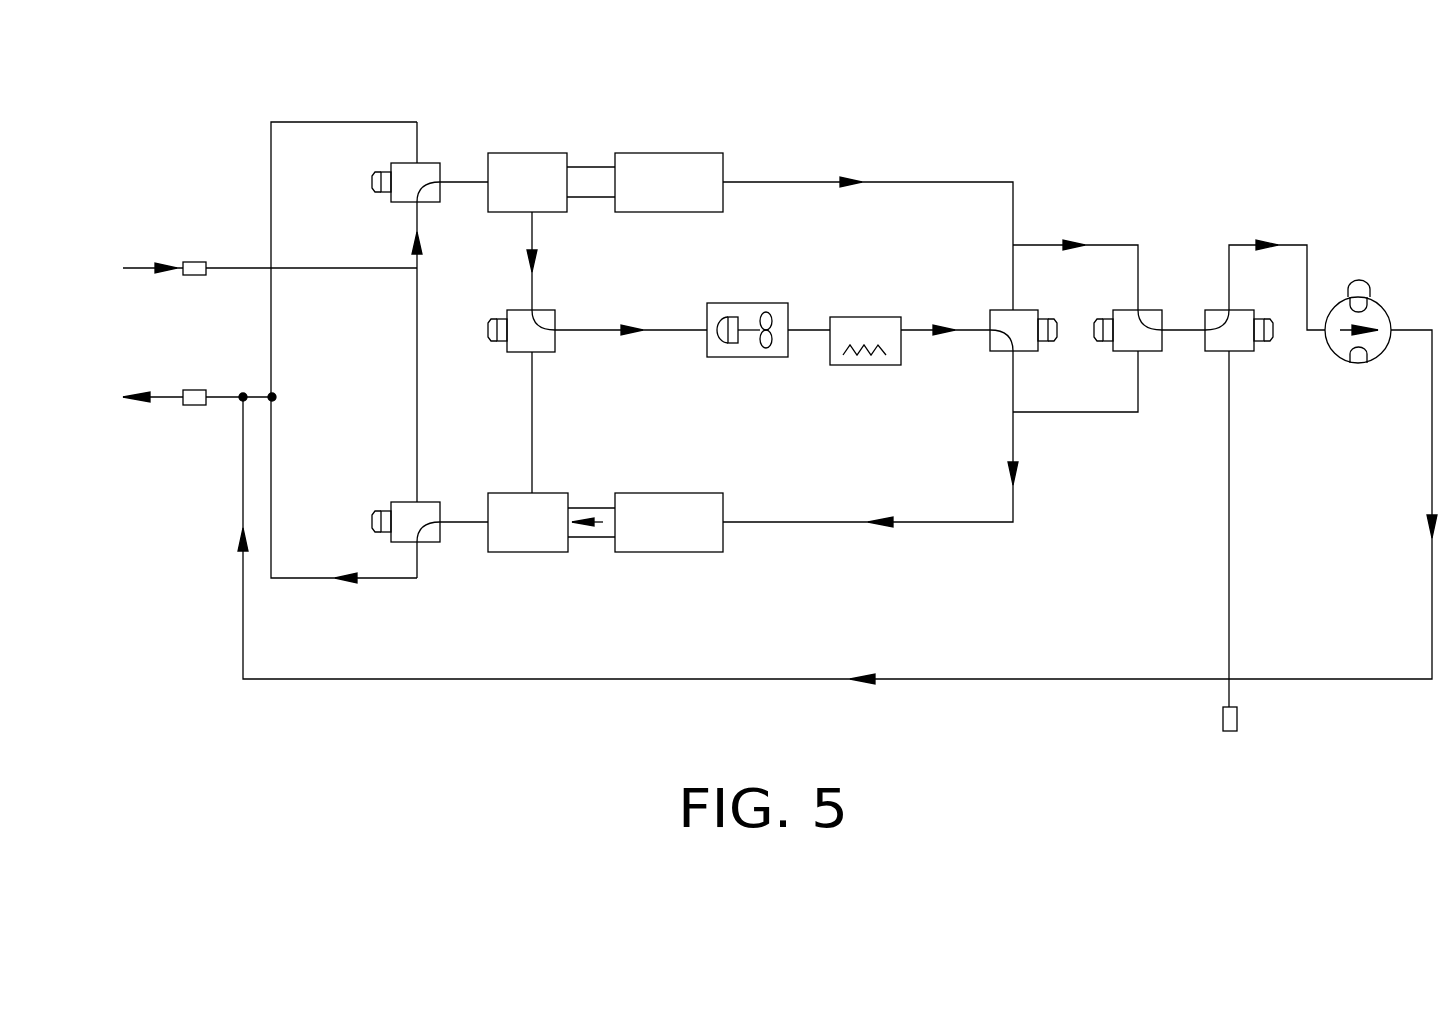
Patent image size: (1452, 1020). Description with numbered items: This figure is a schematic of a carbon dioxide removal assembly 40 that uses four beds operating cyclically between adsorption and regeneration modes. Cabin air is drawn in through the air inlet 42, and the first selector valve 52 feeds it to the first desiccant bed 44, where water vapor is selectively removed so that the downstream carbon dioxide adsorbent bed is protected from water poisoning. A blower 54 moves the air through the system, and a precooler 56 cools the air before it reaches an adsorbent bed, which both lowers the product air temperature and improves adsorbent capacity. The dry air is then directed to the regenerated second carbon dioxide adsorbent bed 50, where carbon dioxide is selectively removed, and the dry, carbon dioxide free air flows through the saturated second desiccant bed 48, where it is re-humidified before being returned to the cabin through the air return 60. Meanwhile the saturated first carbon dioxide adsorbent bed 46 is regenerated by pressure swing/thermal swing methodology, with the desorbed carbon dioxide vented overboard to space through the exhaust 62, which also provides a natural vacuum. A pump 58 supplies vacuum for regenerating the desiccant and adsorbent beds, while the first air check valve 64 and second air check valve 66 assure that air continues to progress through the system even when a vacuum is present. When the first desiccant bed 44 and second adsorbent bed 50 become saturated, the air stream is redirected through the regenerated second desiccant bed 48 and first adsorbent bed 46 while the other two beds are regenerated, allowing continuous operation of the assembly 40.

The carbon dioxide removal assembly 40 is at (1320, 106).
The air inlet 42 is at (193, 262).
The first desiccant bed 44 is at (530, 153).
The first carbon dioxide adsorbent bed 46 is at (695, 153).
The second desiccant bed 48 is at (528, 552).
The second carbon dioxide adsorbent bed 50 is at (693, 493).
The first selector valve 52 is at (403, 163).
The blower 54 is at (747, 303).
The precooler 56 is at (866, 317).
The pump 58 is at (1340, 360).
The air return 60 is at (193, 390).
The exhaust 62 is at (1223, 718).
The first air check valve 64 is at (591, 167).
The second air check valve 66 is at (592, 508).